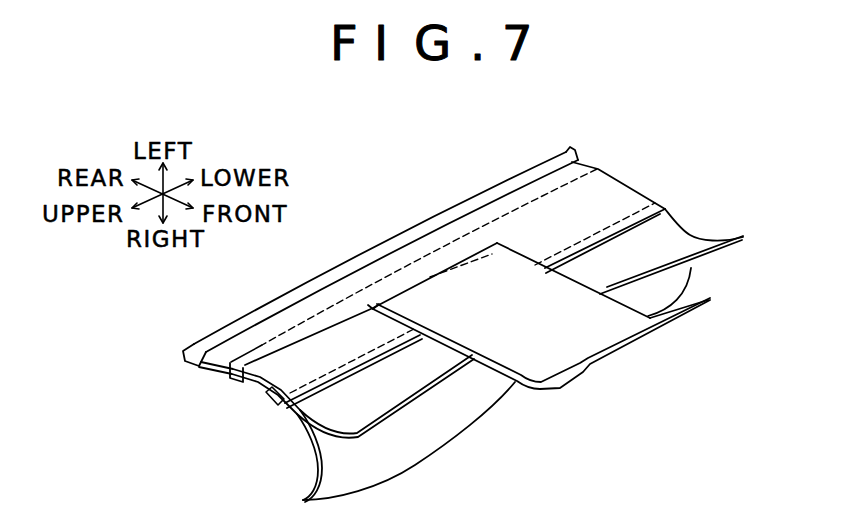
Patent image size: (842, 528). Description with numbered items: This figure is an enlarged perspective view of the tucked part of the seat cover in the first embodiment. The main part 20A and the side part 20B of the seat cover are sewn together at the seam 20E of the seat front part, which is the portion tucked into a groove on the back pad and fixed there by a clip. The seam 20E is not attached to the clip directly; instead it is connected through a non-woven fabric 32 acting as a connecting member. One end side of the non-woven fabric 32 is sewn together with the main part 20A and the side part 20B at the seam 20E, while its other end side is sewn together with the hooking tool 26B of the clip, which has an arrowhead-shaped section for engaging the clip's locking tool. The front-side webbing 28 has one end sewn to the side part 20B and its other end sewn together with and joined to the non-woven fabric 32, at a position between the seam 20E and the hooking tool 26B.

The hooking tool 26B is at (412, 229).
The non-woven fabric 32 is at (617, 189).
The front-side webbing 28 is at (555, 392).
The main part 20A is at (303, 472).
The side part 20B is at (387, 402).
The seam 20E is at (271, 408).